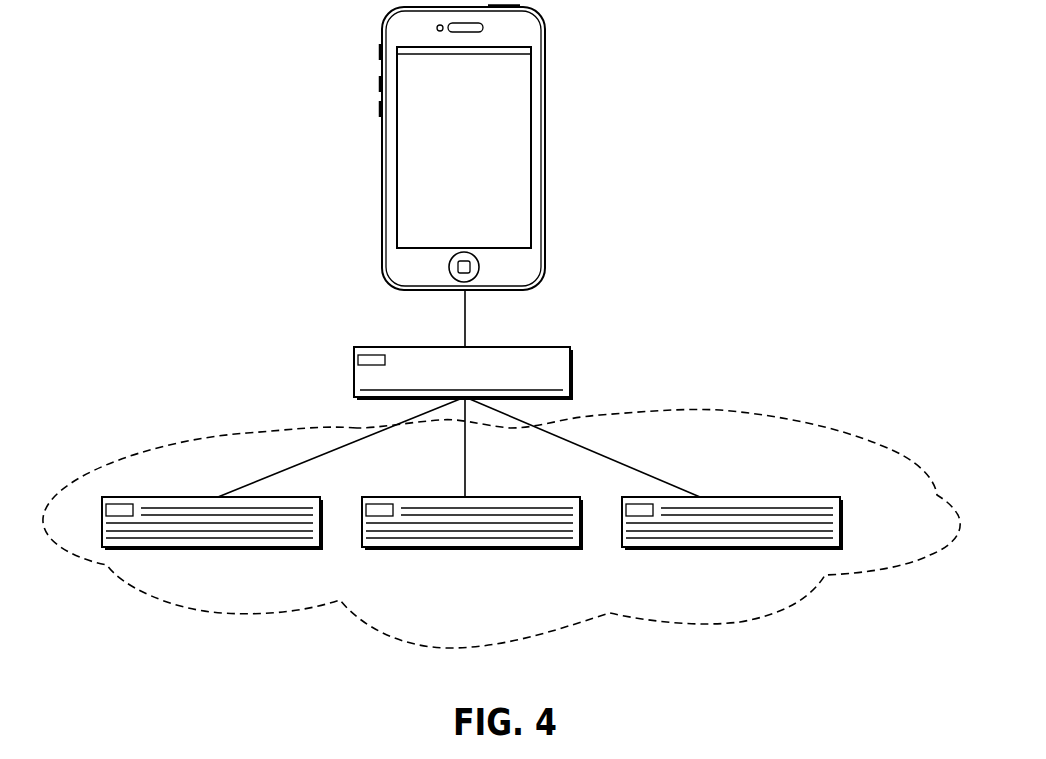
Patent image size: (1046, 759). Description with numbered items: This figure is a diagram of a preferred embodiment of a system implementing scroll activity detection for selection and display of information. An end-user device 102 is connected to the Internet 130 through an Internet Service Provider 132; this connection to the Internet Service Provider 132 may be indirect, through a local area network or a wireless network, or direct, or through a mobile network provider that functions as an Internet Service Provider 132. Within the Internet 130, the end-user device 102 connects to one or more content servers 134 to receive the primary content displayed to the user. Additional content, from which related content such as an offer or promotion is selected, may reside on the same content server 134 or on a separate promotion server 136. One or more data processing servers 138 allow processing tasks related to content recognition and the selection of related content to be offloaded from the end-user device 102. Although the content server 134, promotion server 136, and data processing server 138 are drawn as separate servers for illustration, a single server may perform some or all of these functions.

The end-user device 102 is at (545, 175).
The Internet 130 is at (853, 575).
The Internet Service Provider 132 is at (570, 377).
The content server 134 is at (228, 537).
The promotion server 136 is at (466, 545).
The data processing server 138 is at (696, 545).